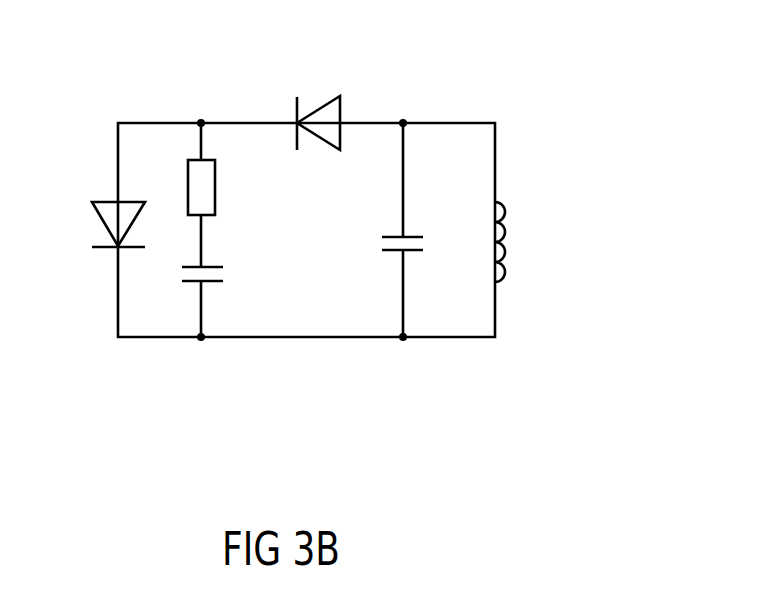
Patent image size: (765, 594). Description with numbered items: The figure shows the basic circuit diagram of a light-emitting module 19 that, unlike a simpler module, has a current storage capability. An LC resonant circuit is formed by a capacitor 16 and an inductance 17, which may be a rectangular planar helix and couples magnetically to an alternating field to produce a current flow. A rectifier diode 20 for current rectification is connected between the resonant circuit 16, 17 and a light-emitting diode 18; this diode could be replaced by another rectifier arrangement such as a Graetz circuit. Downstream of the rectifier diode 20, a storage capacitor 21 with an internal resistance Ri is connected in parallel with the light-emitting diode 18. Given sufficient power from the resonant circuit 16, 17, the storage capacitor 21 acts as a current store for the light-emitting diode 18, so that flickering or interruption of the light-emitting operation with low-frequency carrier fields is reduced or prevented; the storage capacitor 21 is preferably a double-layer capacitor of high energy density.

The capacitor 16 is at (385, 270).
The inductance 17 is at (483, 280).
The light-emitting diode 18 is at (93, 230).
The light-emitting module 19 is at (553, 101).
The rectifier diode 20 is at (340, 101).
The storage capacitor 21 is at (185, 310).